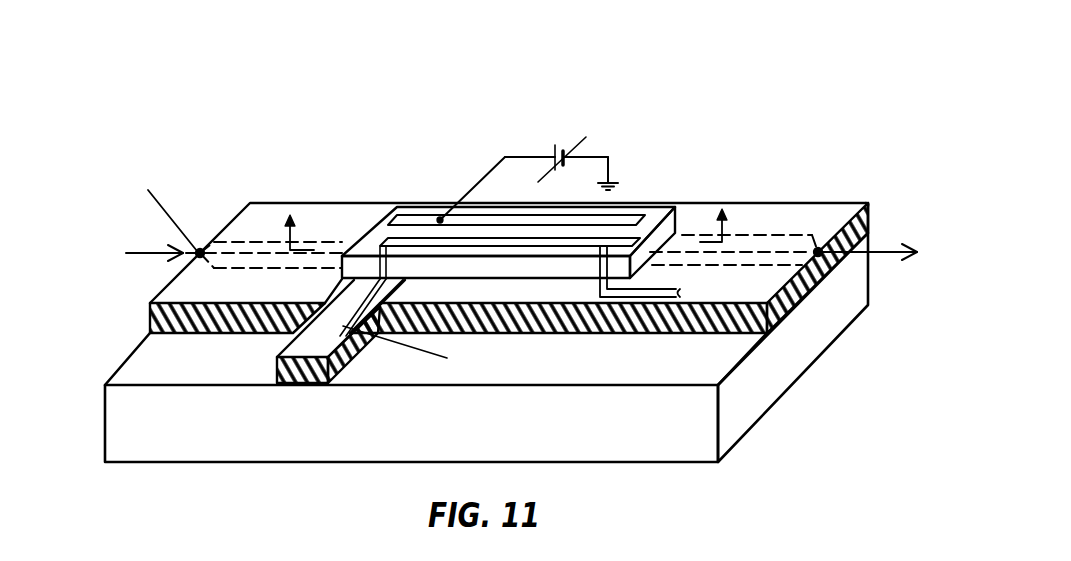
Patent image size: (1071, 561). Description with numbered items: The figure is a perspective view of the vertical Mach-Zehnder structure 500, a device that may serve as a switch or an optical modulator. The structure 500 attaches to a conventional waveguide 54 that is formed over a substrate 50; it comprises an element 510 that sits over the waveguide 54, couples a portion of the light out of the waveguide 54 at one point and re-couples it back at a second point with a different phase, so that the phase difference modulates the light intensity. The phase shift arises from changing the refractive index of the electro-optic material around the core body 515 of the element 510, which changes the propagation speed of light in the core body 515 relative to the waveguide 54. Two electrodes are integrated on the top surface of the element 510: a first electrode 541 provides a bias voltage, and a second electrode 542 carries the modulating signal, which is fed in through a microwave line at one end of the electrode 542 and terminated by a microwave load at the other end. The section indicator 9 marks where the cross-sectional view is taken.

The vertical Mach-Zehnder structure 500 is at (344, 141).
The substrate 50 is at (376, 444).
The waveguide 54 is at (150, 316).
The element 510 is at (378, 255).
The first electrode 541 is at (641, 217).
The second electrode 542 is at (384, 246).
The core body 515 is at (215, 263).
The section line for FIG. 9 is at (508, 228).